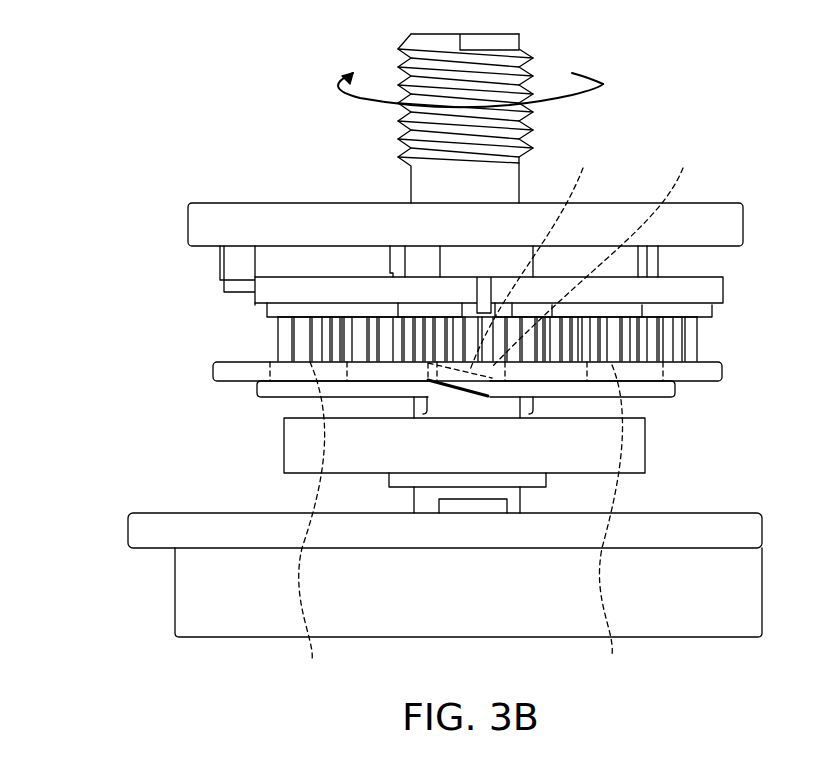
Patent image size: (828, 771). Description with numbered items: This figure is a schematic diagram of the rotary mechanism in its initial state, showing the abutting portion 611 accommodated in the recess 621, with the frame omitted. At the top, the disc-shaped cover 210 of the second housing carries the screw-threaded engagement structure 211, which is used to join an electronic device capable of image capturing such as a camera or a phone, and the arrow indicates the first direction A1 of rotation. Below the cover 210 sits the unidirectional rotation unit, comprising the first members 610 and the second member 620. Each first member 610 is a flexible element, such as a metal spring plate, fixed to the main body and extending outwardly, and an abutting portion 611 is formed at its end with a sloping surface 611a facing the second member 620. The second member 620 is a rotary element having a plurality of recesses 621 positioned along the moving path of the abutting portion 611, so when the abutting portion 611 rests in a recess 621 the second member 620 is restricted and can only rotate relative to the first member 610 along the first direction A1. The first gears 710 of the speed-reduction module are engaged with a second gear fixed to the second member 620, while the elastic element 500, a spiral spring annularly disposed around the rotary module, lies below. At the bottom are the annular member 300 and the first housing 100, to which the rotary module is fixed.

The first housing 100 is at (180, 592).
The annular member 300 is at (135, 535).
The elastic element 500 is at (288, 447).
The first member 610 is at (262, 388).
The abutting portion 611 is at (466, 378).
The sloping surface 611a is at (520, 262).
The second member 620 is at (216, 370).
The recess 621 is at (488, 416).
The first gear 710 is at (305, 345).
The cover 210 is at (196, 223).
The engagement structure 211 is at (395, 135).
The first direction A1 is at (603, 84).